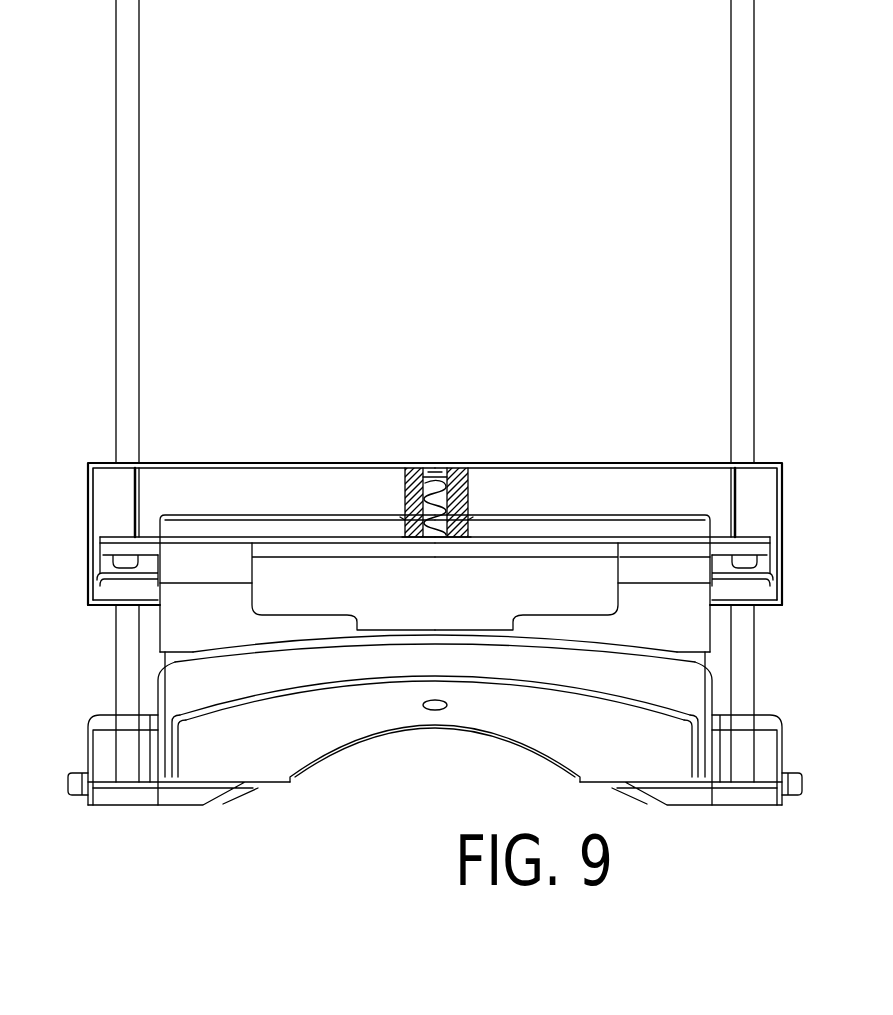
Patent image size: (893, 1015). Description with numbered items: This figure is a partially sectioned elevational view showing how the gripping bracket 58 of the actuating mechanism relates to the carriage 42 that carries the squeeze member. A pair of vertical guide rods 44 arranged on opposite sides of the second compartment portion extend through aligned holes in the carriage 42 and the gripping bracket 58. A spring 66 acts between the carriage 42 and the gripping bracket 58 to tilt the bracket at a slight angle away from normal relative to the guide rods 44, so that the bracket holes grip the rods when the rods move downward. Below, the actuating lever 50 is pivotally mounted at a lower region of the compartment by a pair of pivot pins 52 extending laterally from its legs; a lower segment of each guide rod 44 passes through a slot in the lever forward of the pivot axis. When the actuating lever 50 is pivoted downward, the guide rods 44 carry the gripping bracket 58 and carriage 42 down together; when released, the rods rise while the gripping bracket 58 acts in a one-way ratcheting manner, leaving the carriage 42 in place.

The carriage 42 is at (265, 463).
The guide rods 44 is at (140, 187).
The actuating lever 50 is at (393, 707).
The pivot pins 52 is at (73, 772).
The gripping bracket 58 is at (400, 578).
The spring 66 is at (455, 503).